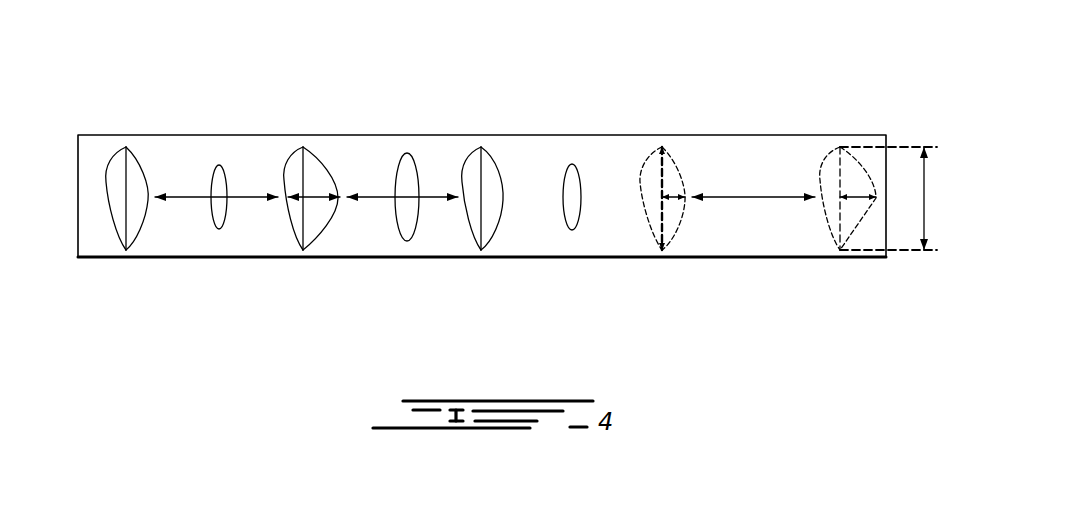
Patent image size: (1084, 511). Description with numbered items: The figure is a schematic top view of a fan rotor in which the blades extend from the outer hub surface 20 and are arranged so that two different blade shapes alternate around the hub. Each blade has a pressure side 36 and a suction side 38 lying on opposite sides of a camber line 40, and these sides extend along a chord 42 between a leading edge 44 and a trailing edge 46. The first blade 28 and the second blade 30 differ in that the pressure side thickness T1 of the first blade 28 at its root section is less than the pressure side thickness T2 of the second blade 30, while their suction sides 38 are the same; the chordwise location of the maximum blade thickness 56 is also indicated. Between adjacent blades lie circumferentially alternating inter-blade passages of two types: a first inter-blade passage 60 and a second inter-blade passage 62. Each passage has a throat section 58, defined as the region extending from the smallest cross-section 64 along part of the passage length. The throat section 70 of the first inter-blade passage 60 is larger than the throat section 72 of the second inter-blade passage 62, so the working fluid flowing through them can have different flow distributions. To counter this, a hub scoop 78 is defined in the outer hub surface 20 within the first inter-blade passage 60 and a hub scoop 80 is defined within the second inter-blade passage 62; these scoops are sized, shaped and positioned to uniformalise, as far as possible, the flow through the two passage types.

The outer hub surface 20 is at (620, 213).
The first blade 28 is at (110, 158).
The second blade 30 is at (290, 155).
The pressure side 36 is at (509, 197).
The suction side 38 is at (466, 155).
The camber line 40 is at (484, 156).
The chord 42 is at (943, 198).
The leading edge 44 is at (840, 147).
The trailing edge 46 is at (840, 250).
The maximum blade thickness 56 is at (313, 200).
The throat section 58 is at (741, 201).
The first inter-blade passage 60 is at (168, 168).
The second inter-blade passage 62 is at (343, 166).
The smallest cross-section 64 is at (382, 197).
The throat section of first inter-blade passage 70 is at (187, 198).
The throat section of second inter-blade passage 72 is at (377, 197).
The hub scoop 78 is at (219, 229).
The hub scoop 80 is at (413, 232).
The pressure side thickness of first blade T1 is at (671, 200).
The pressure side thickness of second blade T2 is at (856, 200).